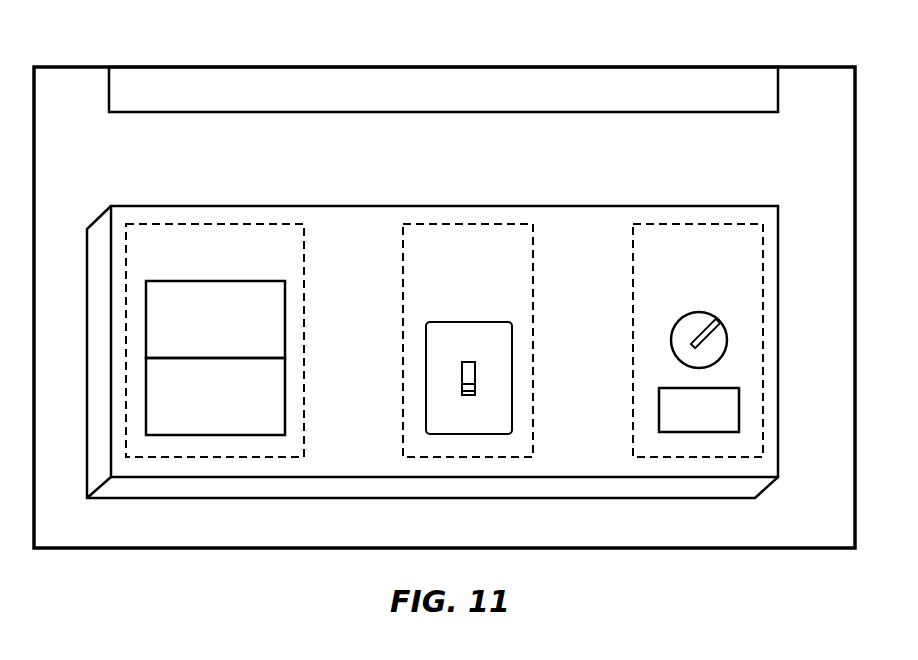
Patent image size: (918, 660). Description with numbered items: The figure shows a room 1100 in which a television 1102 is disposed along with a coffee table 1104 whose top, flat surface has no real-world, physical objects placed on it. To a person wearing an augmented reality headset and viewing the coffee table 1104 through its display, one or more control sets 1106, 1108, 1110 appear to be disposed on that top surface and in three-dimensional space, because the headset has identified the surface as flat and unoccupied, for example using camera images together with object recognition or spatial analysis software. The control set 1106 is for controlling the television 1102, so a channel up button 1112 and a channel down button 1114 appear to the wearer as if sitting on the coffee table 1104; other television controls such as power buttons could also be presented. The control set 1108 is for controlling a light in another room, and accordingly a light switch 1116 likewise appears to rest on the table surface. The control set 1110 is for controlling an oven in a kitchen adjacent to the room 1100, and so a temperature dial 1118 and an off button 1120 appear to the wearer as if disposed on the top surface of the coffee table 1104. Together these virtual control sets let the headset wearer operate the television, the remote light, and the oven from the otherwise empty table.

The room 1100 is at (748, 51).
The television 1102 is at (590, 112).
The coffee table 1104 is at (163, 207).
The control set 1106 is at (215, 213).
The control set 1108 is at (468, 213).
The control set 1110 is at (697, 213).
The channel up button 1112 is at (285, 318).
The channel down button 1114 is at (285, 396).
The light switch 1116 is at (426, 380).
The temperature dial 1118 is at (672, 341).
The off button 1120 is at (659, 411).